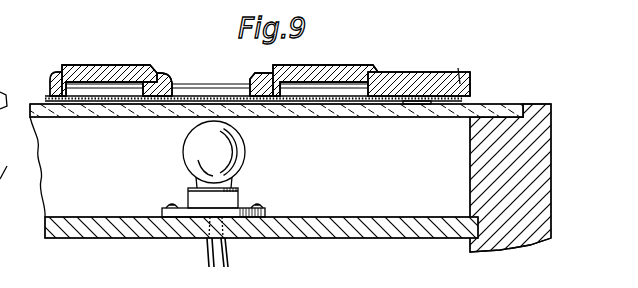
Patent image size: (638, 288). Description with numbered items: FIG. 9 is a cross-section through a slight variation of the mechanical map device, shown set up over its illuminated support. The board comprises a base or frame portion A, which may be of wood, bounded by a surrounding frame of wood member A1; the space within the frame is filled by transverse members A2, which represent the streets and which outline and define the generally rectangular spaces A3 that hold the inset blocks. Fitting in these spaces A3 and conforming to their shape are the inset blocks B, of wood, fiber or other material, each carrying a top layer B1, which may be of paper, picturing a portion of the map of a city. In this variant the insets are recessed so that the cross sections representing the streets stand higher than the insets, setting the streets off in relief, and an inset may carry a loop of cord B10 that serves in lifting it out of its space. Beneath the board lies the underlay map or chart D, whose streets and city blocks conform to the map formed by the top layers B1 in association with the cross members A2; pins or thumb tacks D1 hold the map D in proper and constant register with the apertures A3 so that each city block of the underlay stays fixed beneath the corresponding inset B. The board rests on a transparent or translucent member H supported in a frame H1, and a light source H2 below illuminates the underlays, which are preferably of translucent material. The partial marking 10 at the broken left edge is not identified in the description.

The base or frame portion A is at (432, 71).
The surrounding frame of wood member A1 is at (483, 40).
The transverse members A2 is at (173, 60).
The spaces A3 is at (222, 63).
The inset blocks B is at (78, 70).
The top layer B1 is at (115, 65).
The loop of cord B10 is at (152, 72).
The map or chart D is at (224, 98).
The pins or thumb tacks D1 is at (420, 104).
The transparent or translucent member H is at (470, 106).
The frame H1 is at (527, 173).
The light source H2 is at (225, 162).
The cord 10 is at (12, 167).